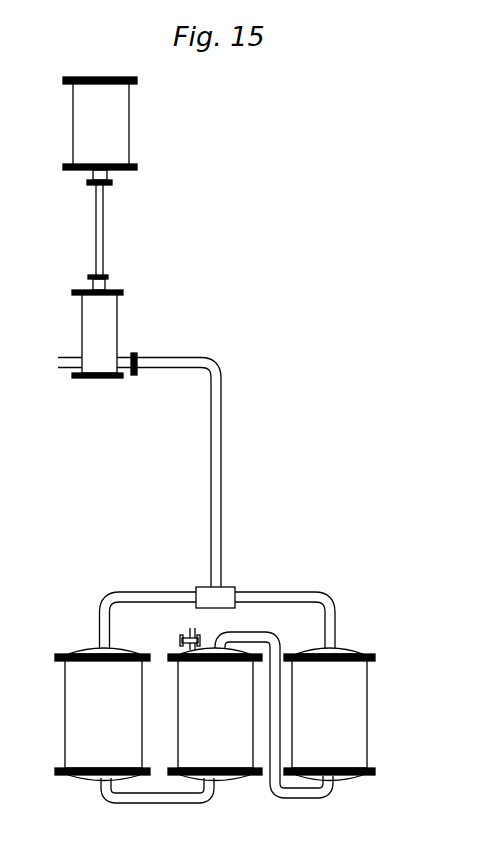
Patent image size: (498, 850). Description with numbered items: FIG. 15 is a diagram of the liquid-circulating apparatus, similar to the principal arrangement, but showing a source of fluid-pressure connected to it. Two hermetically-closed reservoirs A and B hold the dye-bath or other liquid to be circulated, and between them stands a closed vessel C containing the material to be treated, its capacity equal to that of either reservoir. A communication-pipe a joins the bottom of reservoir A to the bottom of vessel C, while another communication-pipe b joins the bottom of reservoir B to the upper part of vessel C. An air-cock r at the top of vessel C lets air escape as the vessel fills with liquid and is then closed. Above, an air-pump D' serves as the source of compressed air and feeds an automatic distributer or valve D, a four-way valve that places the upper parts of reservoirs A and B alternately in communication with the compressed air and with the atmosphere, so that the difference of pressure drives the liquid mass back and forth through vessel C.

The air-pump D' is at (128, 333).
The automatic distributer or valve D is at (194, 501).
The reservoir A is at (102, 714).
The reservoir B is at (329, 714).
The vessel C is at (215, 714).
The communication-pipe a is at (167, 792).
The communication-pipe b is at (270, 713).
The air-cock r is at (188, 630).